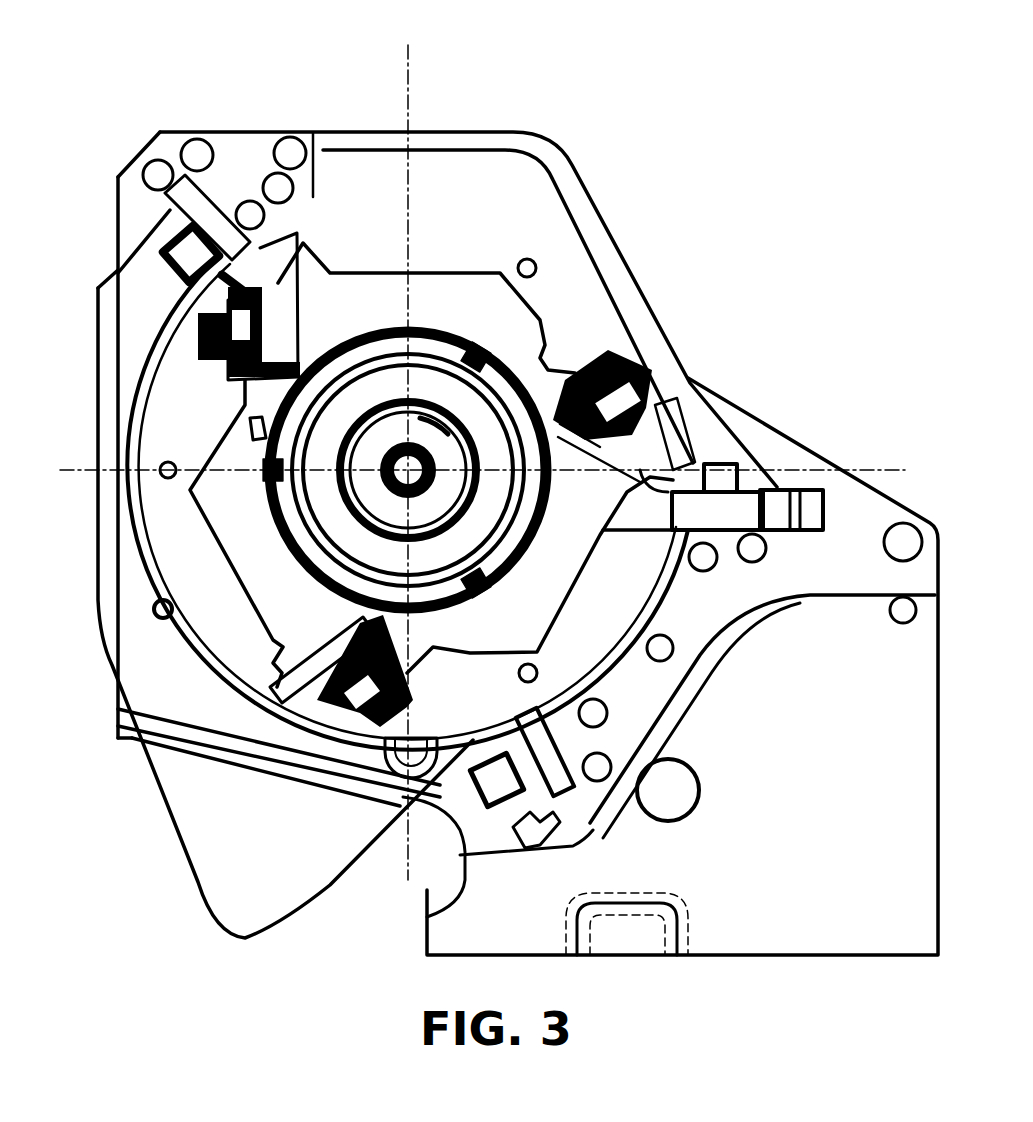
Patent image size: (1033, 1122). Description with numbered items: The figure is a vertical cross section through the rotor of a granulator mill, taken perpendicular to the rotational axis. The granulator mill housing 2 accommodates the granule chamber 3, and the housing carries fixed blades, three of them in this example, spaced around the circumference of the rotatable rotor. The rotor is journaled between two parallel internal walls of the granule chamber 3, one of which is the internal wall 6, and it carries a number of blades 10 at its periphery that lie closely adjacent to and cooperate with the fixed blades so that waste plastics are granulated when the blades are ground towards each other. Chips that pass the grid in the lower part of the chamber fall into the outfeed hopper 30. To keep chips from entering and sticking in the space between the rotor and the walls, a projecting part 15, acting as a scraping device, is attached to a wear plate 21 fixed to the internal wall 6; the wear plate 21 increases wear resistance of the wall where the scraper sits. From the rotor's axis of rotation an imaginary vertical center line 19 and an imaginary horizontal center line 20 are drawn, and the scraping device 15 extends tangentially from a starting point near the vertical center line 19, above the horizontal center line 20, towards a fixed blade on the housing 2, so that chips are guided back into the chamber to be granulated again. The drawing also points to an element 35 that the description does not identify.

The granulator mill housing 2 is at (112, 228).
The granule chamber 3 is at (490, 238).
The internal wall 6 is at (475, 130).
The blade 10 is at (279, 282).
The projecting part 15 is at (560, 370).
The imaginary vertical center line 19 is at (410, 105).
The imaginary horizontal center line 20 is at (870, 470).
The wear plate 21 is at (495, 190).
The outfeed hopper 30 is at (240, 937).
The ring 35 is at (124, 406).